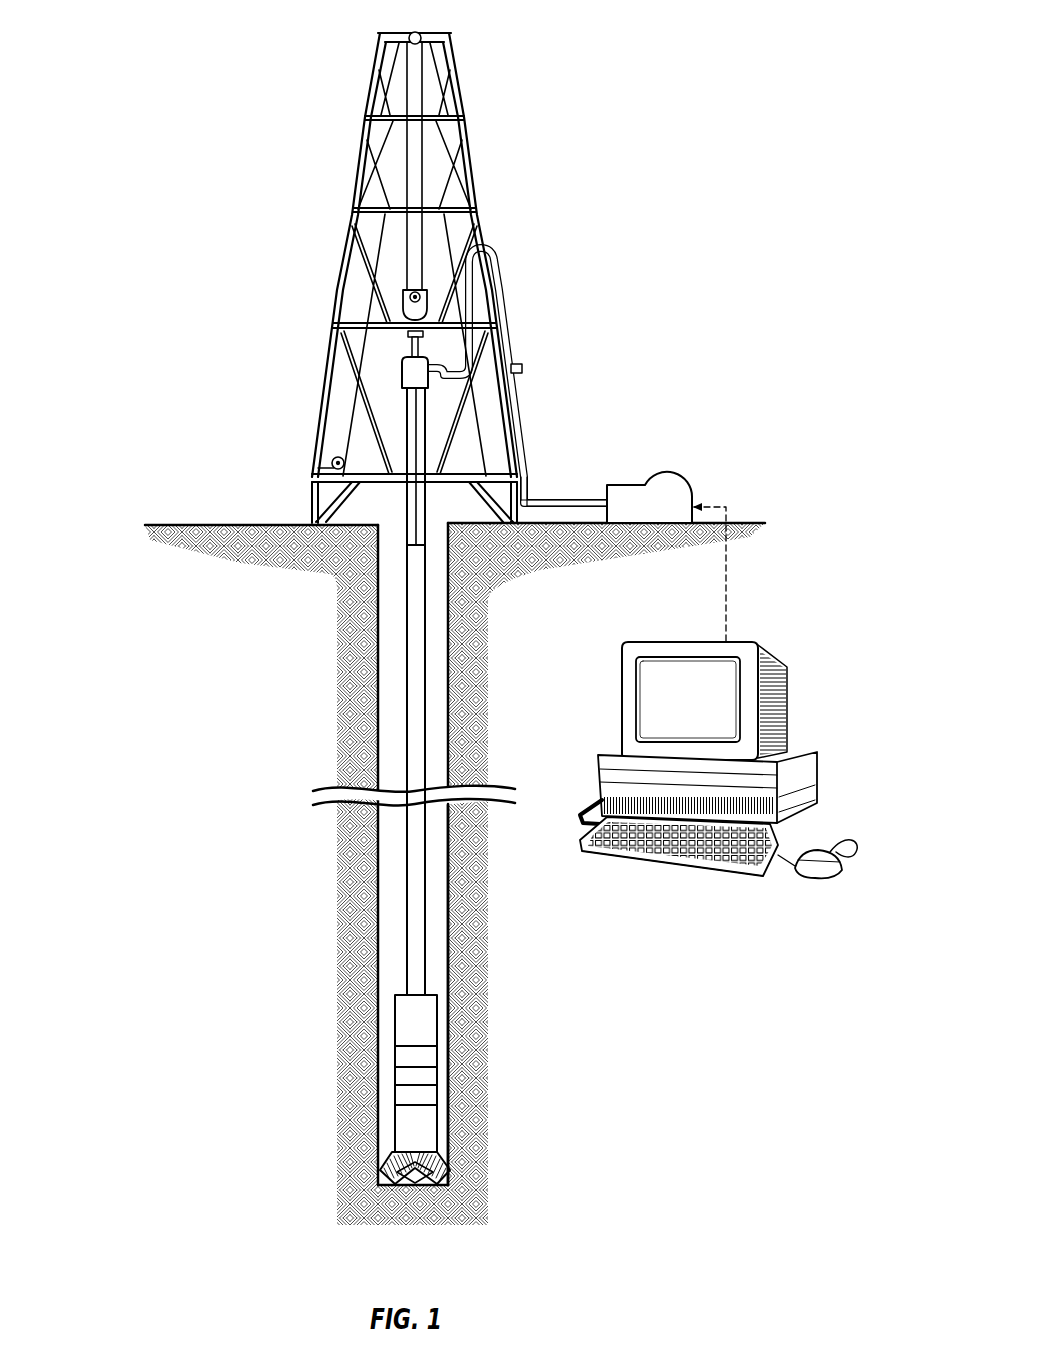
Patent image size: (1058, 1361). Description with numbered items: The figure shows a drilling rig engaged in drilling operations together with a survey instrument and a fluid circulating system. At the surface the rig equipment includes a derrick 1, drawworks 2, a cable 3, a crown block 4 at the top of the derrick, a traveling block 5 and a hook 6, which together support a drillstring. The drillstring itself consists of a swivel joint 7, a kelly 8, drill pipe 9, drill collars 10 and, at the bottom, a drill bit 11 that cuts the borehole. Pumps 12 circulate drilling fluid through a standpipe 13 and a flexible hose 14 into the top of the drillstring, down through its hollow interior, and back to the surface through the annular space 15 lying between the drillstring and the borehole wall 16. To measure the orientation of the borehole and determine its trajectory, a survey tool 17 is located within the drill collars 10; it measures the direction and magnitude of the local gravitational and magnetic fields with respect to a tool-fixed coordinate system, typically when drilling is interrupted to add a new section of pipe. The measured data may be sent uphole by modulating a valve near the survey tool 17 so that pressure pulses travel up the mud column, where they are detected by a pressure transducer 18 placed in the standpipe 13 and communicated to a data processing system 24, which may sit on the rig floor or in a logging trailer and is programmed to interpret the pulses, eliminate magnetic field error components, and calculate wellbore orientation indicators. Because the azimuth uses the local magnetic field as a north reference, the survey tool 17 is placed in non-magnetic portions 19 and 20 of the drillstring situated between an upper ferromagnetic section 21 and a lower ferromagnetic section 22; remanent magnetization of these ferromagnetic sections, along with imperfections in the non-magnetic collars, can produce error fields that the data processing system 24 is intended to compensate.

The derrick 1 is at (407, 278).
The drawworks 2 is at (333, 470).
The cable 3 is at (350, 312).
The crown block 4 is at (411, 33).
The traveling block 5 is at (405, 296).
The hook 6 is at (413, 332).
The swivel joint 7 is at (403, 370).
The kelly 8 is at (405, 528).
The drill pipe 9 is at (405, 665).
The drill collars 10 is at (375, 1048).
The drill bit 11 is at (393, 1157).
The pumps 12 is at (675, 490).
The standpipe 13 is at (530, 473).
The flexible hose 14 is at (468, 367).
The annular space 15 is at (438, 720).
The borehole wall 16 is at (473, 642).
The survey tool 17 is at (425, 1073).
The pressure transducer 18 is at (522, 370).
The non-magnetic portion 19 is at (425, 1048).
The non-magnetic portion 20 is at (425, 1098).
The upper ferromagnetic section 21 is at (425, 1022).
The lower ferromagnetic section 22 is at (425, 1135).
The data processing system 24 is at (803, 613).